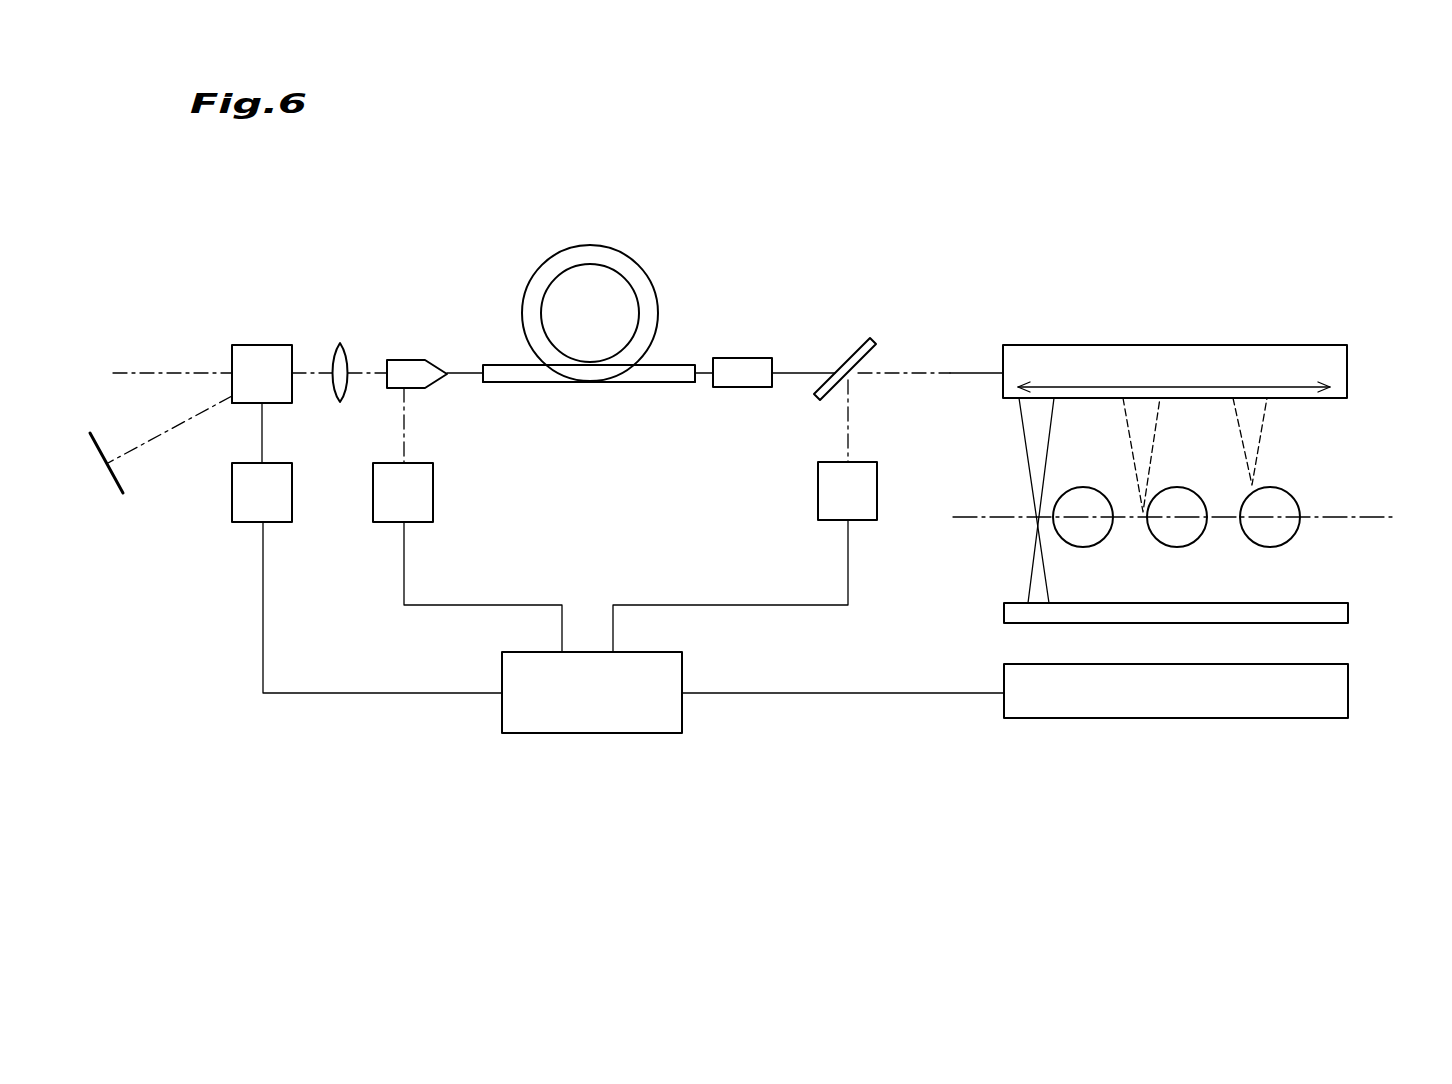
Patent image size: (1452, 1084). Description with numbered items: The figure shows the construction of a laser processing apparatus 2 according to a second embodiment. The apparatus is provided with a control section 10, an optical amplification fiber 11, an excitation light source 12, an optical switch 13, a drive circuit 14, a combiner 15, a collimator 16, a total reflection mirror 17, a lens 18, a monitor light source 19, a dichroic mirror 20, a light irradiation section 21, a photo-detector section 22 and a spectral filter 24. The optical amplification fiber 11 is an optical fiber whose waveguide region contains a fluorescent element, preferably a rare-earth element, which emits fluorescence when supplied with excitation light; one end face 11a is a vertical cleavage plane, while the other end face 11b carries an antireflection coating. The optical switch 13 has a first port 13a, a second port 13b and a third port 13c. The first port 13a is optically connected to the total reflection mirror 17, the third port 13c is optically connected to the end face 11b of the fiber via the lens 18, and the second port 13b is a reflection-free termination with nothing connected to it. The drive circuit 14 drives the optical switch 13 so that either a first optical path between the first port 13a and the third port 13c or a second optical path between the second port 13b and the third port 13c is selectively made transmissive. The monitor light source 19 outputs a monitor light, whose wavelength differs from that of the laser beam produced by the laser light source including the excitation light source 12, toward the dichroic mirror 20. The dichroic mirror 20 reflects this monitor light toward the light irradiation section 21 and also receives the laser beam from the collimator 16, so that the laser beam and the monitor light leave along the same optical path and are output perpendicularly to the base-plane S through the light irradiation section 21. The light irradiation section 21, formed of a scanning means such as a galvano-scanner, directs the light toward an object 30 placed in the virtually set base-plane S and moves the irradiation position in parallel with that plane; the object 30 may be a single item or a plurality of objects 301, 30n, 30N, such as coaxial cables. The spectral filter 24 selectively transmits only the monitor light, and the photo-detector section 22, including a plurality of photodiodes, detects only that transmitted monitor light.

The laser processing apparatus 2 is at (1128, 157).
The control section 10 is at (542, 735).
The optical amplification fiber 11 is at (632, 260).
The end face 11a is at (700, 375).
The end face 11b is at (483, 378).
The excitation light source 12 is at (433, 488).
The optical switch 13 is at (260, 345).
The first port 13a is at (232, 404).
The second port 13b is at (232, 372).
The third port 13c is at (292, 378).
The drive circuit 14 is at (293, 488).
The combiner 15 is at (410, 360).
The collimator 16 is at (743, 358).
The total reflection mirror 17 is at (124, 484).
The lens 18 is at (343, 353).
The monitor light source 19 is at (877, 490).
The dichroic mirror 20 is at (850, 356).
The light irradiation section 21 is at (1347, 373).
The photo-detector section 22 is at (1348, 692).
The spectral filter 24 is at (1348, 613).
The object 30 is at (1228, 485).
The object 301 is at (1083, 487).
The object 30n is at (1177, 487).
The object 30N is at (1327, 502).
The base-plane S is at (1189, 518).